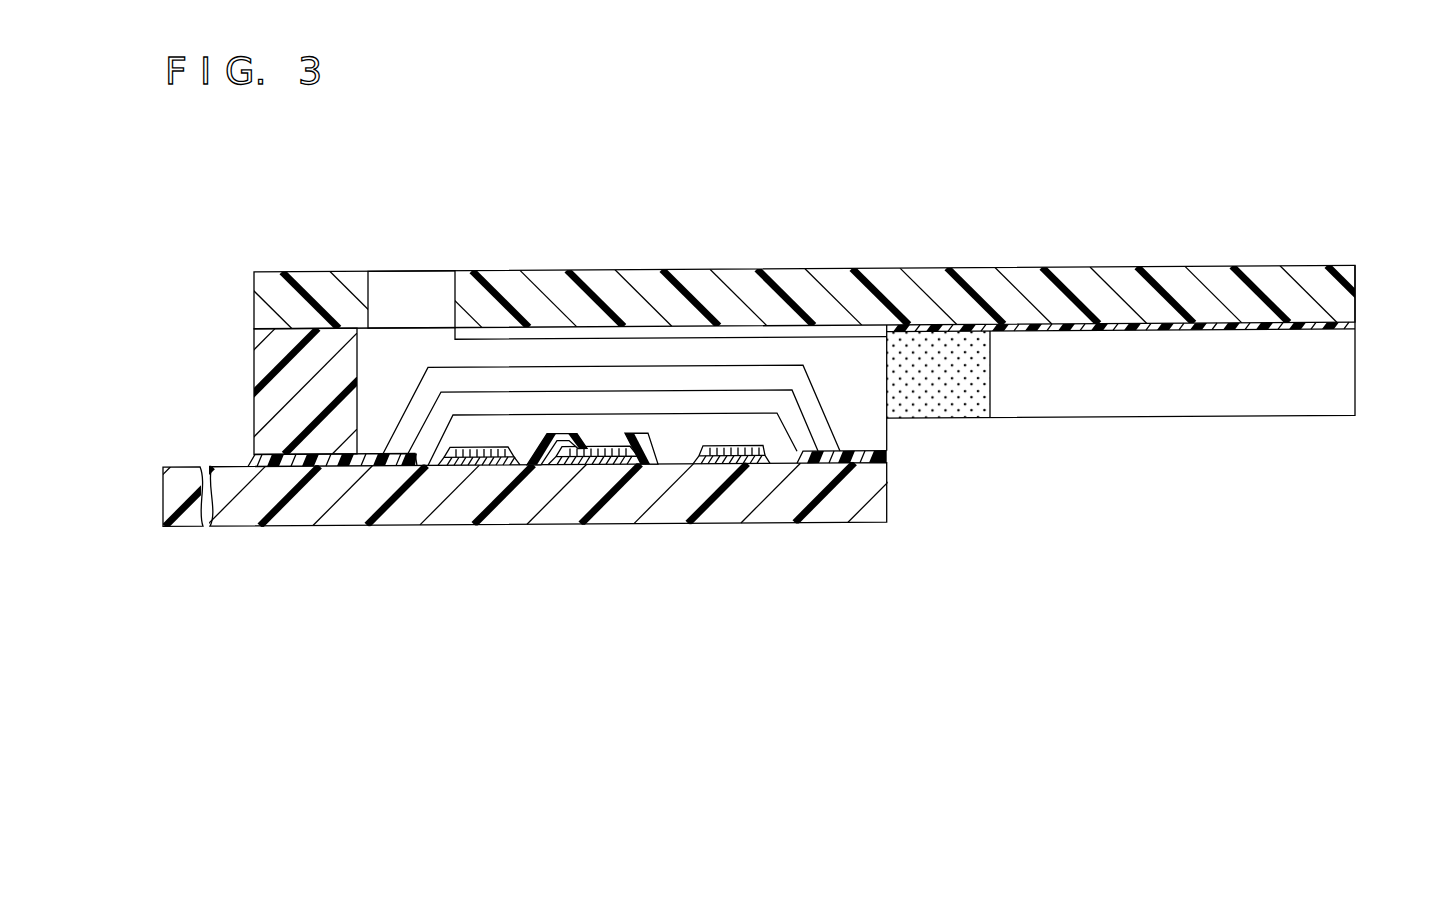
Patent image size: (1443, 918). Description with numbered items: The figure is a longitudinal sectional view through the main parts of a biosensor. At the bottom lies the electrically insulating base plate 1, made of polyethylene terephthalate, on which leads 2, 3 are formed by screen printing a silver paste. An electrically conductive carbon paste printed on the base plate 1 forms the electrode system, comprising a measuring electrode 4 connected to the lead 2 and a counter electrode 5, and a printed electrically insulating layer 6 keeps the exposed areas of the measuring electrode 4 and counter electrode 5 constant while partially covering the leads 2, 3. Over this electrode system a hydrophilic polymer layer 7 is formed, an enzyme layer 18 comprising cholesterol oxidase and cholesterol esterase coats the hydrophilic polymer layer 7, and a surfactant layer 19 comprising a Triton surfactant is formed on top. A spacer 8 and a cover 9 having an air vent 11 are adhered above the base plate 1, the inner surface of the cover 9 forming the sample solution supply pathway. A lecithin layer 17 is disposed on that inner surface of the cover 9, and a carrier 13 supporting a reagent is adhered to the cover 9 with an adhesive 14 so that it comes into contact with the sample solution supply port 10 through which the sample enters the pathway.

The electrically insulating base plate 1 is at (342, 525).
The lead 2 is at (607, 467).
The lead 3 is at (480, 467).
The measuring electrode 4 is at (630, 467).
The counter electrode 5 is at (433, 467).
The electrically insulating layer 6 is at (272, 468).
The hydrophilic polymer layer 7 is at (782, 455).
The spacer 8 is at (256, 366).
The cover 9 is at (698, 290).
The sample solution supply port 10 is at (873, 424).
The air vent 11 is at (395, 290).
The carrier 13 is at (1205, 405).
The adhesive 14 is at (1358, 326).
The lecithin layer 17 is at (460, 332).
The enzyme layer 18 is at (500, 403).
The surfactant layer 19 is at (598, 375).